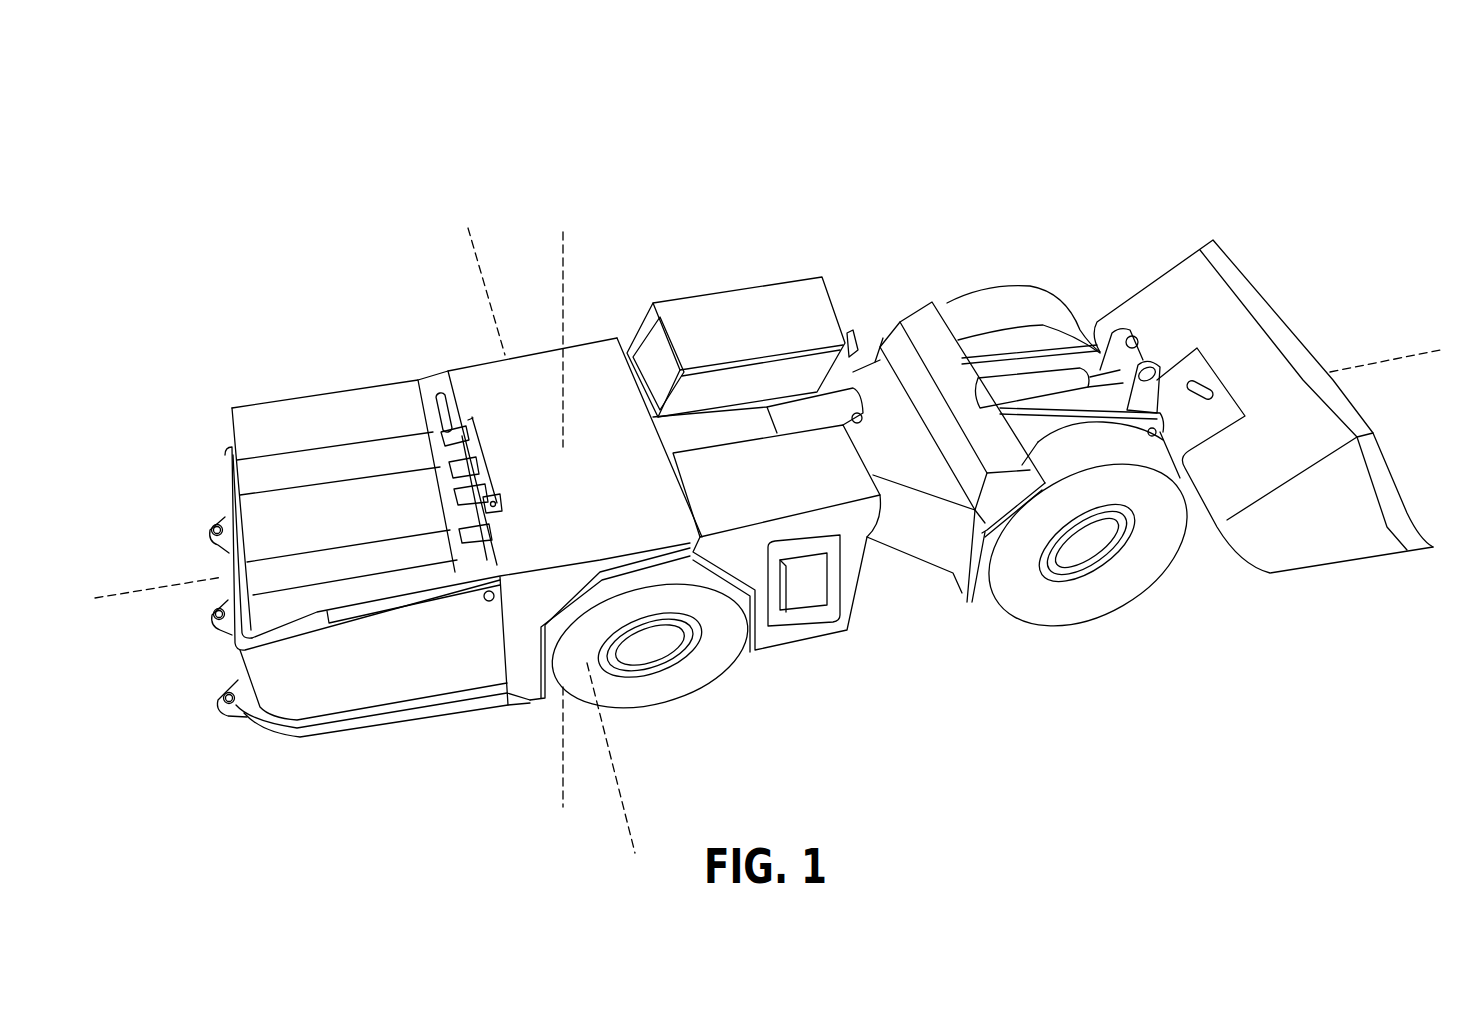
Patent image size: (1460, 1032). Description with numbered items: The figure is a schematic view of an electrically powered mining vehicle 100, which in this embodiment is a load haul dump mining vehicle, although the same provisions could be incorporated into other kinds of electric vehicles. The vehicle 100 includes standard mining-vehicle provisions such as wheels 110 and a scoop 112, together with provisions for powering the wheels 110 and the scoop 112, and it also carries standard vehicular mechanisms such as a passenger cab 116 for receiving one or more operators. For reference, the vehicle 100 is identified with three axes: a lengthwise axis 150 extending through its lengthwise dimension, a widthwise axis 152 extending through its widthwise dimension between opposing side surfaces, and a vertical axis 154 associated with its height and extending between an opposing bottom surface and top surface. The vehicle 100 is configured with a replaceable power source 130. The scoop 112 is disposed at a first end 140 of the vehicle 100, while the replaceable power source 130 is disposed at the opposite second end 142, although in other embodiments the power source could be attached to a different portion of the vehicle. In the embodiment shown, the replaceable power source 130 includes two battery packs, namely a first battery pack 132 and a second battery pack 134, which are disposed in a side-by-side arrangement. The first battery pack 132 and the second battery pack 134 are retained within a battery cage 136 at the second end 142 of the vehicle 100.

The electrically powered mining vehicle 100 is at (502, 148).
The wheels 110 is at (1120, 575).
The scoop 112 is at (1330, 540).
The passenger cab 116 is at (752, 305).
The replaceable power source 130 is at (313, 369).
The first battery pack 132 is at (340, 432).
The second battery pack 134 is at (362, 528).
The battery cage 136 is at (380, 683).
The first end 140 is at (1306, 293).
The second end 142 is at (209, 655).
The lengthwise axis 150 is at (172, 582).
The widthwise axis 152 is at (482, 282).
The vertical axis 154 is at (563, 277).